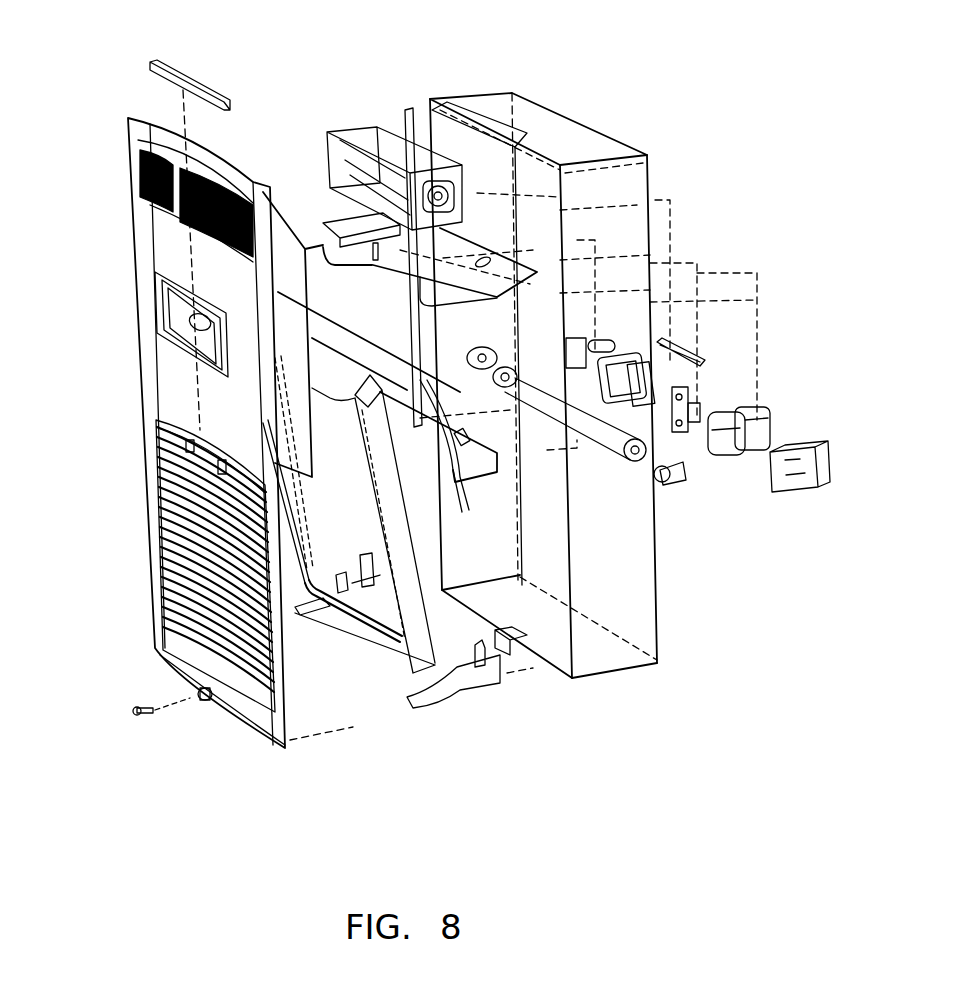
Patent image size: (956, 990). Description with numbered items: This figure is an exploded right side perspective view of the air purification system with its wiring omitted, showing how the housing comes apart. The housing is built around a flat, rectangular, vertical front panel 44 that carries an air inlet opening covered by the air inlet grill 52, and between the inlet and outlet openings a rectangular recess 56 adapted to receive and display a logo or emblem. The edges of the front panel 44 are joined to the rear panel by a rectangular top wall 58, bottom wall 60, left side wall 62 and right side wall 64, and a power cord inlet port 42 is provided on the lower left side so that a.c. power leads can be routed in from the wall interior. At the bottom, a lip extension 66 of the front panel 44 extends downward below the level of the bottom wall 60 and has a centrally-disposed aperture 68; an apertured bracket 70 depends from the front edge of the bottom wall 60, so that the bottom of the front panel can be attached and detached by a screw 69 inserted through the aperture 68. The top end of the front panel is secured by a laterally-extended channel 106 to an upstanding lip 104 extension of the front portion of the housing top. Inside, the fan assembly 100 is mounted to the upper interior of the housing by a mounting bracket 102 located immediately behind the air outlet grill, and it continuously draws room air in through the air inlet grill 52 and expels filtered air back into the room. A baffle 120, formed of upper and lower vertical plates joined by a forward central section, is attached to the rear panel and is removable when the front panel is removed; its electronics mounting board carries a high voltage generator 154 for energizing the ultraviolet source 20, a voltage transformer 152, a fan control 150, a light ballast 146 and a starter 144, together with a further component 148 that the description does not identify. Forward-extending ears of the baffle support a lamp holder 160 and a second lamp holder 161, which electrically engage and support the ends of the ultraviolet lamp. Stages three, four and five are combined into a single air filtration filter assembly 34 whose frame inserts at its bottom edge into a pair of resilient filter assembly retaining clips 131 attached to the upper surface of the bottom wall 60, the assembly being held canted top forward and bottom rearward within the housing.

The ultraviolet source 20 is at (603, 437).
The air filtration filter assembly 34 is at (377, 638).
The power cord inlet port 42 is at (460, 512).
The front panel 44 is at (219, 436).
The air inlet grill 52 is at (155, 522).
The rectangular recess 56 is at (183, 313).
The top wall 58 is at (137, 177).
The bottom wall 60 is at (553, 633).
The left side wall 62 is at (455, 470).
The right side wall 64 is at (628, 242).
The lip extension 66 is at (167, 662).
The aperture 68 is at (195, 693).
The screw 69 is at (137, 715).
The apertured bracket 70 is at (508, 642).
The fan assembly 100 is at (352, 126).
The mounting bracket 102 is at (296, 186).
The upstanding lip 104 is at (460, 100).
The laterally-extended channel 106 is at (195, 80).
The baffle 120 is at (394, 96).
The filter assembly retaining clips 131 is at (410, 694).
The starter 144 is at (603, 342).
The light ballast 146 is at (693, 352).
The switch 148 is at (653, 385).
The fan control 150 is at (700, 407).
The voltage transformer 152 is at (760, 433).
The high voltage generator 154 is at (775, 470).
The lamp holder 160 is at (467, 358).
The second lamp holder 161 is at (687, 475).